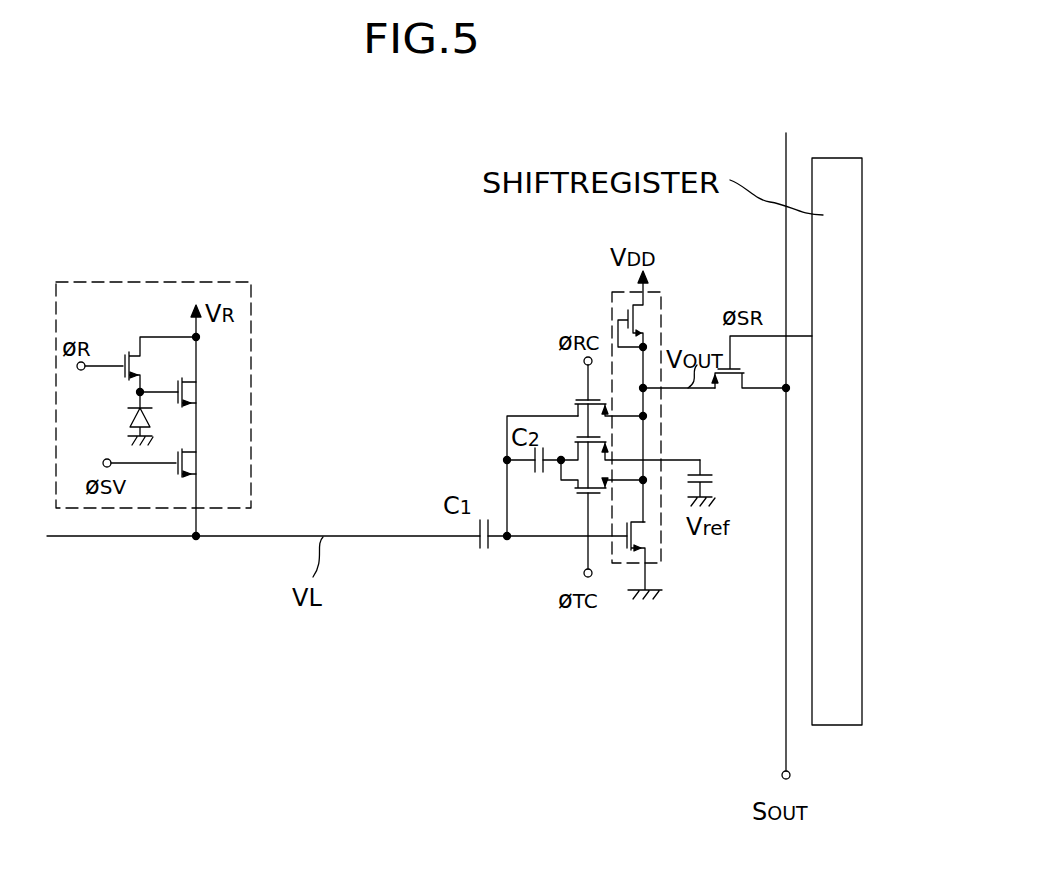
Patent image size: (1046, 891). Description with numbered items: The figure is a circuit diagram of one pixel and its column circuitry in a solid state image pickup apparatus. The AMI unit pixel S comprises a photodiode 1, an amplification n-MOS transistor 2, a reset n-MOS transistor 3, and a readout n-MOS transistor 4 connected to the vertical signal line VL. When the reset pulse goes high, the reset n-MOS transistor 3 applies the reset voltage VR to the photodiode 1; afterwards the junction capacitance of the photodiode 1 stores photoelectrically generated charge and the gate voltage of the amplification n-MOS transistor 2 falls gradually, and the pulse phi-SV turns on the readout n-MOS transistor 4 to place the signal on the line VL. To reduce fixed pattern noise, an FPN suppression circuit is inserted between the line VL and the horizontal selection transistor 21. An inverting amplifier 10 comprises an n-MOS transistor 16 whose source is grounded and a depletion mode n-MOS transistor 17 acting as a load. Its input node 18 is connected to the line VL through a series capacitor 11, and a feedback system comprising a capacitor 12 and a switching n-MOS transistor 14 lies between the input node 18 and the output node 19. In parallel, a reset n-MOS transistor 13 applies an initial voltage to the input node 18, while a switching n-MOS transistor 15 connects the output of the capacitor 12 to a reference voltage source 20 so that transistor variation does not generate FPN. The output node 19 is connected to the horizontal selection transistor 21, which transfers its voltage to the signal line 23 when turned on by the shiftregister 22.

The AMI unit pixel S is at (180, 282).
The photodiode 1 is at (123, 412).
The amplification n-MOS transistor 2 is at (198, 391).
The reset n-MOS transistor 3 is at (125, 330).
The readout n-MOS transistor 4 is at (200, 462).
The inverting amplifier 10 is at (635, 565).
The capacitor 11 is at (480, 553).
The capacitor 12 is at (535, 470).
The reset n-MOS transistor 13 is at (577, 397).
The switching n-MOS transistor 14 is at (570, 490).
The switching n-MOS transistor 15 is at (604, 452).
The n-MOS transistor 16 is at (647, 535).
The depletion mode n-MOS transistor 17 is at (650, 315).
The input node 18 is at (530, 537).
The output node 19 is at (648, 441).
The reference voltage source 20 is at (715, 482).
The horizontal selection transistor 21 is at (732, 384).
The shiftregister 22 is at (832, 168).
The signal line 23 is at (782, 683).